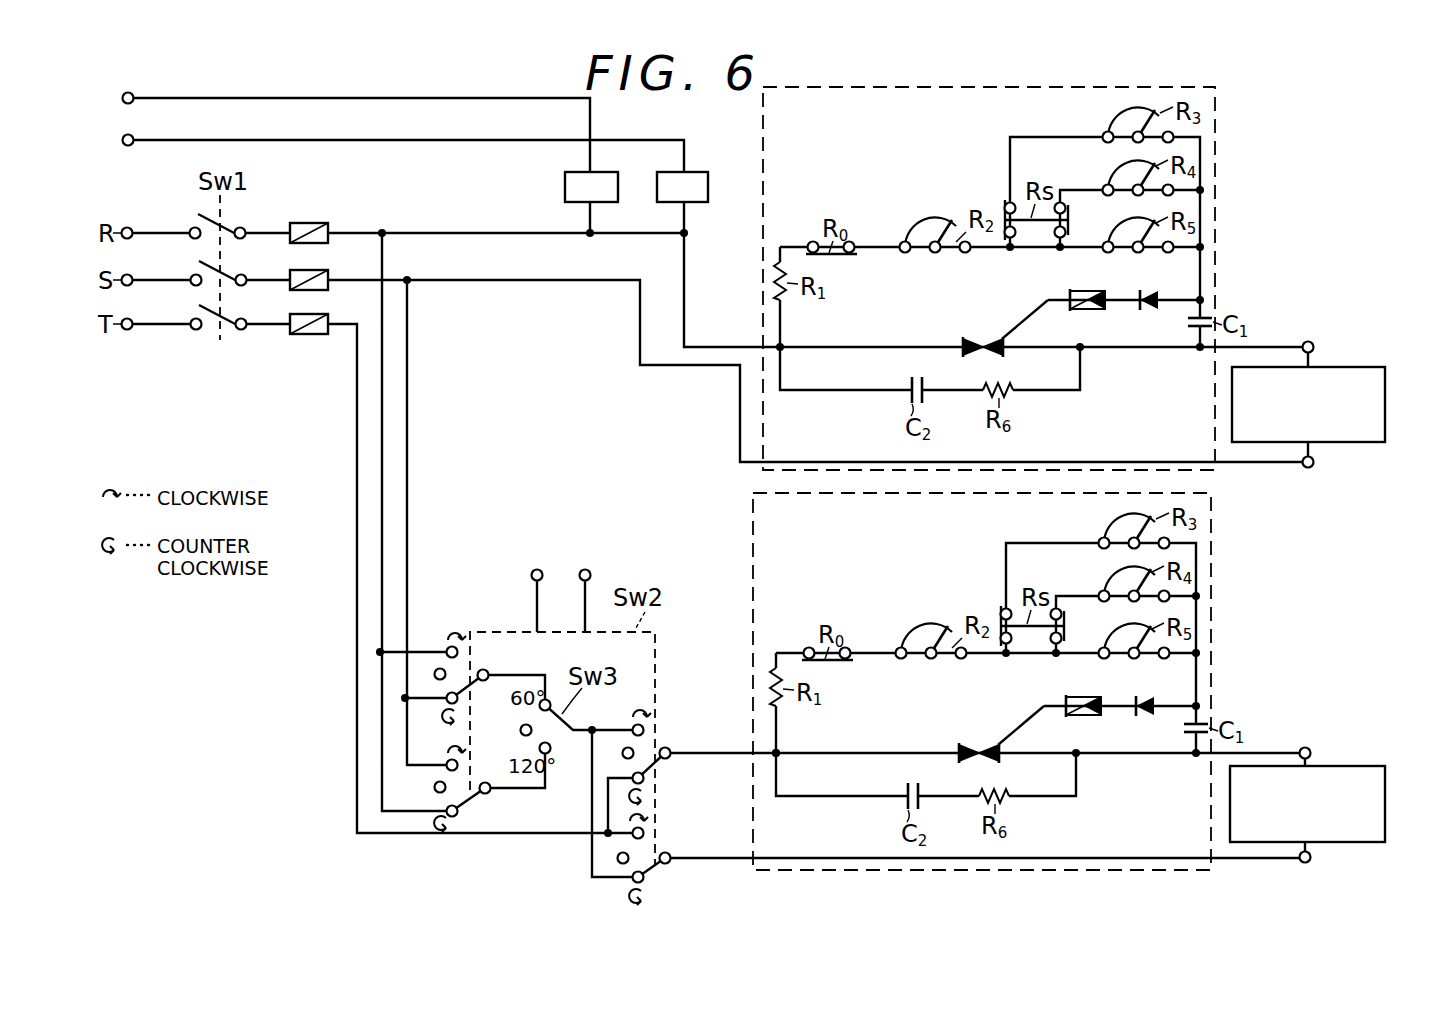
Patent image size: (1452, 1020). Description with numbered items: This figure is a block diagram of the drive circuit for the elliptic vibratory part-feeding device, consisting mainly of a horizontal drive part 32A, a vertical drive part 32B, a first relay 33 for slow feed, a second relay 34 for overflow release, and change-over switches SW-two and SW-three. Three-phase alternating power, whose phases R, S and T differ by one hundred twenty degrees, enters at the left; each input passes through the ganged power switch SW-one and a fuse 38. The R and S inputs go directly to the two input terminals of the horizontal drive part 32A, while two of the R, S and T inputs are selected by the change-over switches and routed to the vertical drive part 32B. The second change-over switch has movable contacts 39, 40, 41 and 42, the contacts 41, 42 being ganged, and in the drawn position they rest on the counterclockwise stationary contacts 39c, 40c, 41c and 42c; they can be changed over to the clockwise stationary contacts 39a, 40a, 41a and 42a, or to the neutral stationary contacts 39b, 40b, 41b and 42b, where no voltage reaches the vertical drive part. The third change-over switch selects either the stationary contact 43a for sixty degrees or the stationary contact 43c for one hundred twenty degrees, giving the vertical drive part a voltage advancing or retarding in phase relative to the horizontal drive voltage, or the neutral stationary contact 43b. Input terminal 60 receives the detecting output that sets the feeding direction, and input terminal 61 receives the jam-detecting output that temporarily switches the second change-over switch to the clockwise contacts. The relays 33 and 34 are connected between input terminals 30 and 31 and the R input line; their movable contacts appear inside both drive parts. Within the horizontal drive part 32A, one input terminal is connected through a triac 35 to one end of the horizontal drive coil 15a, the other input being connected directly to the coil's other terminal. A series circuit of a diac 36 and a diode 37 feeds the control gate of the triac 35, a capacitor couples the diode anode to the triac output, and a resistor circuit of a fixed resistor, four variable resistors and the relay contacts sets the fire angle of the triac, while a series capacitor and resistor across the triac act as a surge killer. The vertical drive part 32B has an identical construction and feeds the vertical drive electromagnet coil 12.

The input terminal 30 is at (128, 92).
The input terminal 31 is at (128, 134).
The first relay for slow feed 33 is at (565, 186).
The second relay for over-flow release 34 is at (708, 186).
The fuse 38 is at (307, 240).
The horizontal drive part 32A is at (1216, 100).
The vertical drive part 32B is at (1212, 506).
The triac 35 is at (990, 344).
The diac 36 is at (1086, 291).
The diode 37 is at (1150, 291).
The horizontal drive coil 15a is at (1326, 367).
The vertical drive electromagnet coil 12 is at (1325, 766).
The movable contact 39 is at (481, 672).
The stationary contact for clockwise direction 39a is at (447, 650).
The neutral stationary contact 39b is at (435, 673).
The stationary contact for counterclockwise direction 39c is at (447, 697).
The movable contact 40 is at (488, 792).
The stationary contact for clockwise direction 40a is at (447, 763).
The neutral stationary contact 40b is at (435, 786).
The stationary contact for counterclockwise direction 40c is at (447, 810).
The movable contact 41 is at (668, 759).
The stationary contact for clockwise direction 41a is at (645, 729).
The neutral stationary contact 41b is at (635, 752).
The stationary contact for counterclockwise direction 41c is at (648, 786).
The movable contact 42 is at (668, 864).
The stationary contact for clockwise direction 42a is at (645, 834).
The neutral stationary contact 42b is at (630, 858).
The stationary contact for counterclockwise direction 42c is at (646, 881).
The stationary contact for 60° 43a is at (545, 699).
The neutral stationary contact 43b is at (520, 729).
The stationary contact for 120° 43c is at (548, 754).
The input terminal 61 is at (537, 569).
The input terminal 60 is at (586, 569).